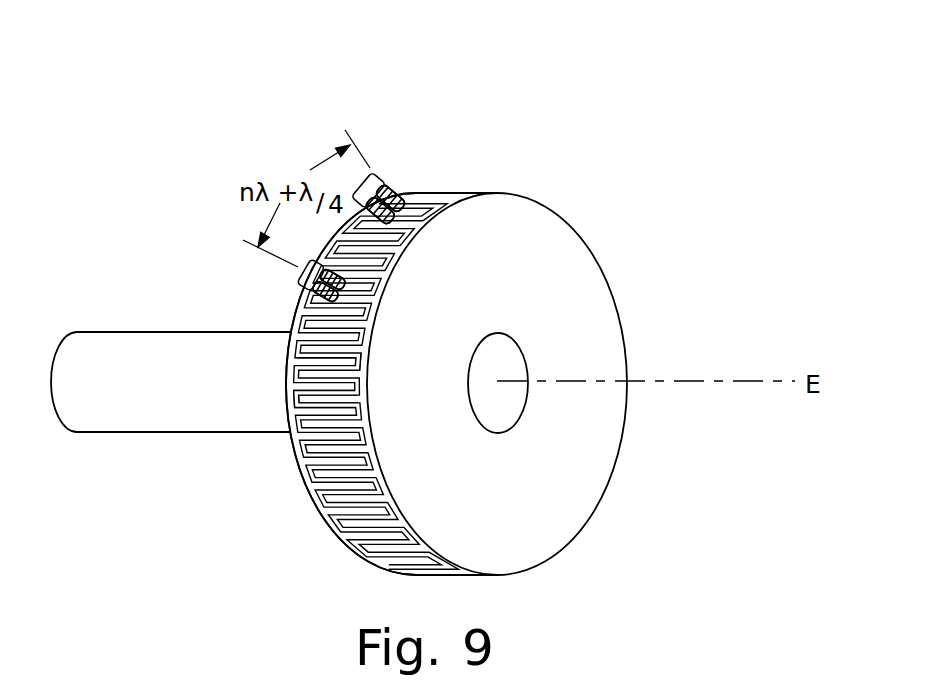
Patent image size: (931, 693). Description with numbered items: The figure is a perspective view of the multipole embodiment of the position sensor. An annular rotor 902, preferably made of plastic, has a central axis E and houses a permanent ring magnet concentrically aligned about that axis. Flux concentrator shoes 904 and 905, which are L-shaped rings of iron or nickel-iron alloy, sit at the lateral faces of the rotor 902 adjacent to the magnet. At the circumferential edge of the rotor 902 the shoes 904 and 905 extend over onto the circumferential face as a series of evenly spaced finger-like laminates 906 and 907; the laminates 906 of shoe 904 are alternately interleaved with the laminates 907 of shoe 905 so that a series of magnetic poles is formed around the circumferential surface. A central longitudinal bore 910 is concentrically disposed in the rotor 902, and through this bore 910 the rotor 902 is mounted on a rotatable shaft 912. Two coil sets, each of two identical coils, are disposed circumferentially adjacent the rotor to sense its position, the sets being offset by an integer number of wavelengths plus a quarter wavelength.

The annular rotor 902 is at (494, 378).
The flux concentrator shoe 904 is at (267, 384).
The flux concentrator shoe 905 is at (456, 364).
The finger-like laminates 906 is at (248, 316).
The finger-like laminates 907 is at (277, 452).
The central longitudinal bore 910 is at (610, 395).
The rotatable shaft 912 is at (170, 345).